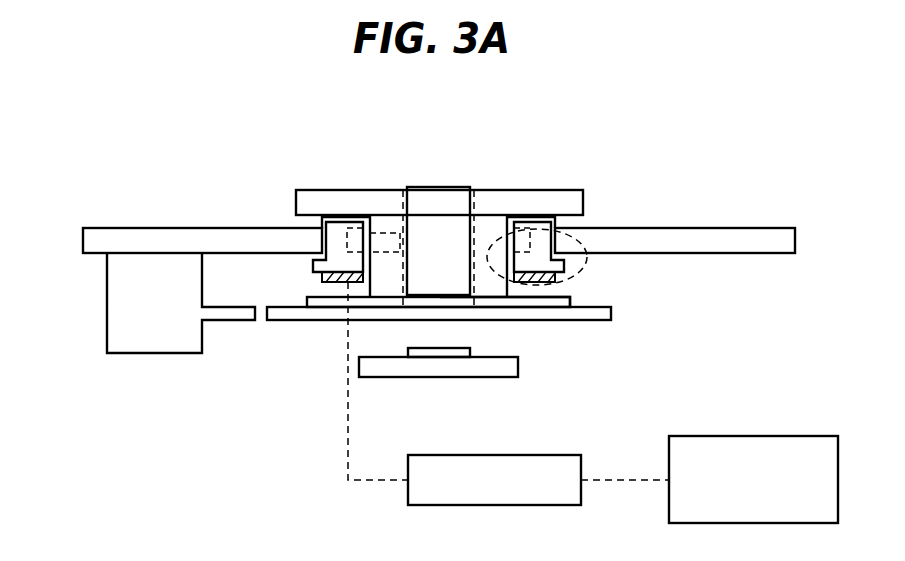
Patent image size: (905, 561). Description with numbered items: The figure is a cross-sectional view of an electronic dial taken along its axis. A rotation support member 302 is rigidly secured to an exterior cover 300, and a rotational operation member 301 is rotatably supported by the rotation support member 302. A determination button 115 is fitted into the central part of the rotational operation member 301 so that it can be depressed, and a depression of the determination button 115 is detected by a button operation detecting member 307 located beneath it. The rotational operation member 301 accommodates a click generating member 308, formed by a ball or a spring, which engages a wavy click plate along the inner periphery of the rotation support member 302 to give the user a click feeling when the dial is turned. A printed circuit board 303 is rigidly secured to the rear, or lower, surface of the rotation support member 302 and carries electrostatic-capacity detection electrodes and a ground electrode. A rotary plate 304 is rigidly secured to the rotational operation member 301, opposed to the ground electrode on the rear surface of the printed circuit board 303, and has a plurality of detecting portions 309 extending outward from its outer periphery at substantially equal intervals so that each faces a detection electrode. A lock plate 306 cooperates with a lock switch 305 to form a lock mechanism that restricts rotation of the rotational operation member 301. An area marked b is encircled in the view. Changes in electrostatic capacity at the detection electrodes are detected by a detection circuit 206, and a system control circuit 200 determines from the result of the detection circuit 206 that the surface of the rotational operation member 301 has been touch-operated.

The determination button 115 is at (438, 207).
The exterior cover 300 is at (668, 235).
The rotational operation member 301 is at (352, 190).
The rotation support member 302 is at (324, 221).
The printed circuit board 303 is at (325, 284).
The rotary plate 304 is at (573, 300).
The lock switch 305 is at (123, 299).
The lock plate 306 is at (603, 313).
The button operation detecting member 307 is at (510, 364).
The click generating member 308 is at (383, 233).
The detecting portions 309 is at (338, 302).
The region b is at (540, 222).
The detection circuit 206 is at (464, 393).
The system control circuit 200 is at (709, 479).